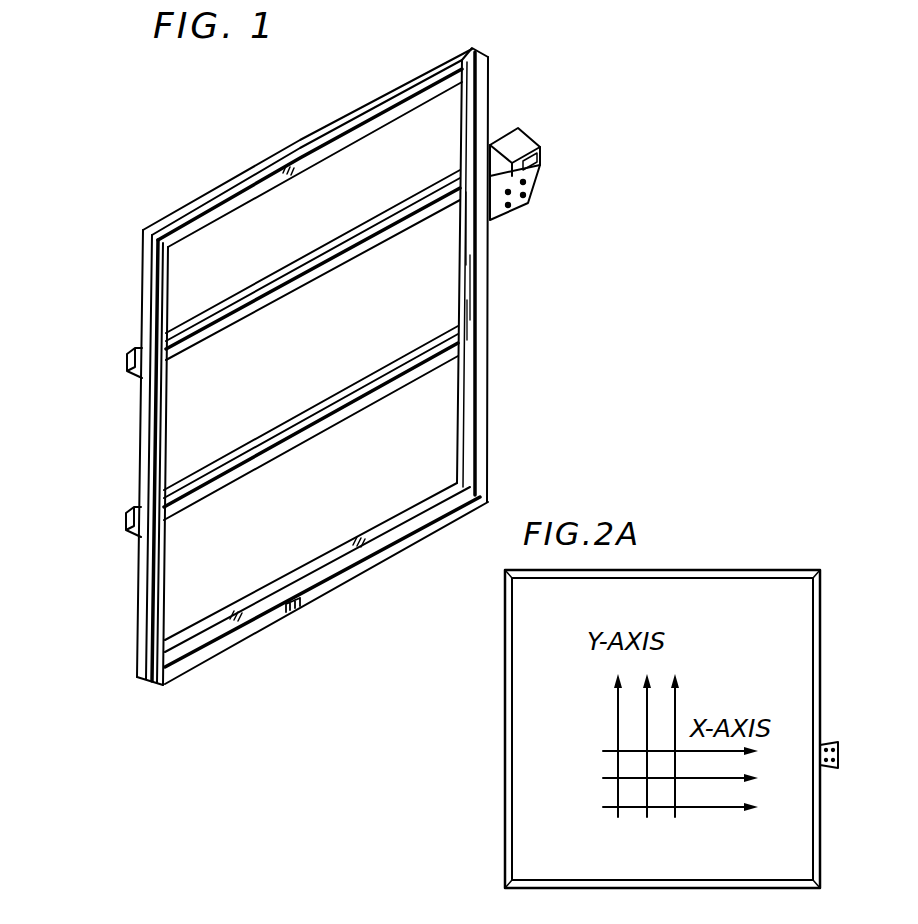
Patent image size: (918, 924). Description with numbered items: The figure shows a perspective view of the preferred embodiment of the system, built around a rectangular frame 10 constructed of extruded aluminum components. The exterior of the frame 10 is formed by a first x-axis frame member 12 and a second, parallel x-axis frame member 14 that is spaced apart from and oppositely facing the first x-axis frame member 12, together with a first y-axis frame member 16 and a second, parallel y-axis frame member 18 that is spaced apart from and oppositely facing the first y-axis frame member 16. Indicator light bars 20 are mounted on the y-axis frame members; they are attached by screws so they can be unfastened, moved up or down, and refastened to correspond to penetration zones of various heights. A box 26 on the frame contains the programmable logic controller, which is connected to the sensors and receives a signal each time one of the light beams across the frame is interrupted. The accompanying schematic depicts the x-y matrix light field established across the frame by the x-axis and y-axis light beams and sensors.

The rectangular frame 10 is at (230, 684).
The first x-axis frame member 12 is at (357, 572).
The second x-axis frame member 14 is at (237, 178).
The first y-axis frame member 16 is at (137, 447).
The second y-axis frame member 18 is at (488, 297).
The indicator light bars 20 is at (128, 363).
The box 26 is at (510, 130).